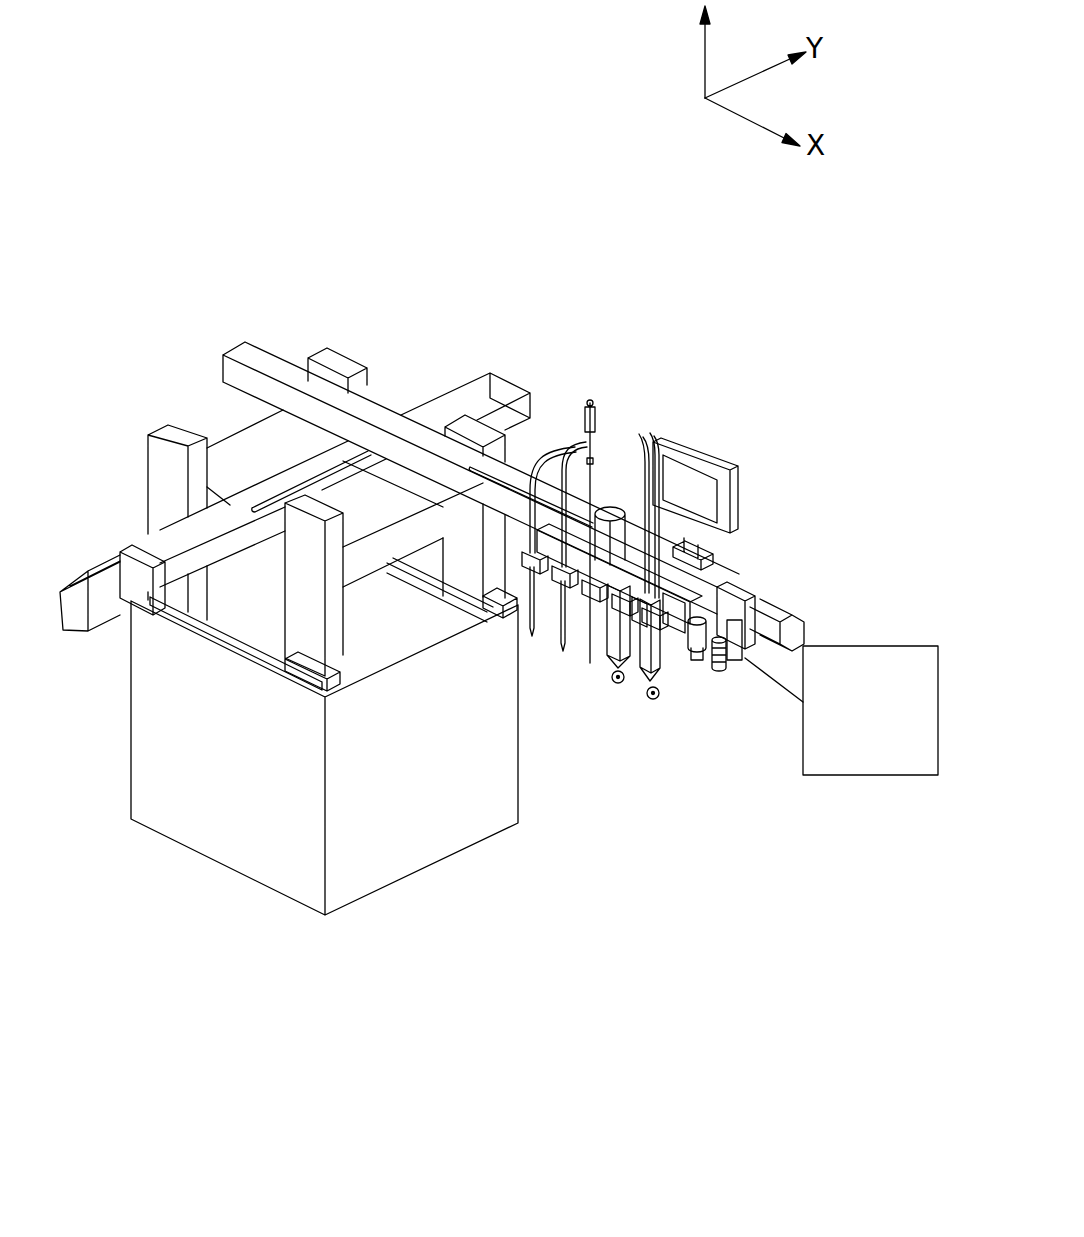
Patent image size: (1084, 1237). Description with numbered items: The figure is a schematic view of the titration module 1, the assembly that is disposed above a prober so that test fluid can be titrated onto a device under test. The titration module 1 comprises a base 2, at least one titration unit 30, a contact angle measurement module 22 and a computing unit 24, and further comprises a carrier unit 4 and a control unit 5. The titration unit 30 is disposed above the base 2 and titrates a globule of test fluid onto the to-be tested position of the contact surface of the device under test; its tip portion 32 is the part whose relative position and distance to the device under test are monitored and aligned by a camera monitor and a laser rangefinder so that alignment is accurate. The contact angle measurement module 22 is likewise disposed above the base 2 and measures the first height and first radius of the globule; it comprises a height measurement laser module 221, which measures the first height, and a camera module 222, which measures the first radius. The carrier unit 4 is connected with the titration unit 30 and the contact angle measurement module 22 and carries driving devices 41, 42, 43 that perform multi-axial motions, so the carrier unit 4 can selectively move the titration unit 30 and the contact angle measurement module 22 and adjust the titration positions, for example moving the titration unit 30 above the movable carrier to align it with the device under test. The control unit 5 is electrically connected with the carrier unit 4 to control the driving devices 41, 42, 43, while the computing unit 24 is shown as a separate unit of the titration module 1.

The titration module 1 is at (720, 392).
The base 2 is at (240, 782).
The carrier unit 4 is at (436, 386).
The control unit 5 is at (713, 503).
The contact angle measurement module 22 is at (773, 763).
The computing unit 24 is at (870, 710).
The titration unit 30 is at (636, 698).
The tip portion 32 is at (613, 684).
The driving device 41 is at (797, 628).
The driving device 42 is at (94, 592).
The driving device 43 is at (617, 507).
The height measurement laser module 221 is at (693, 662).
The camera module 222 is at (723, 668).